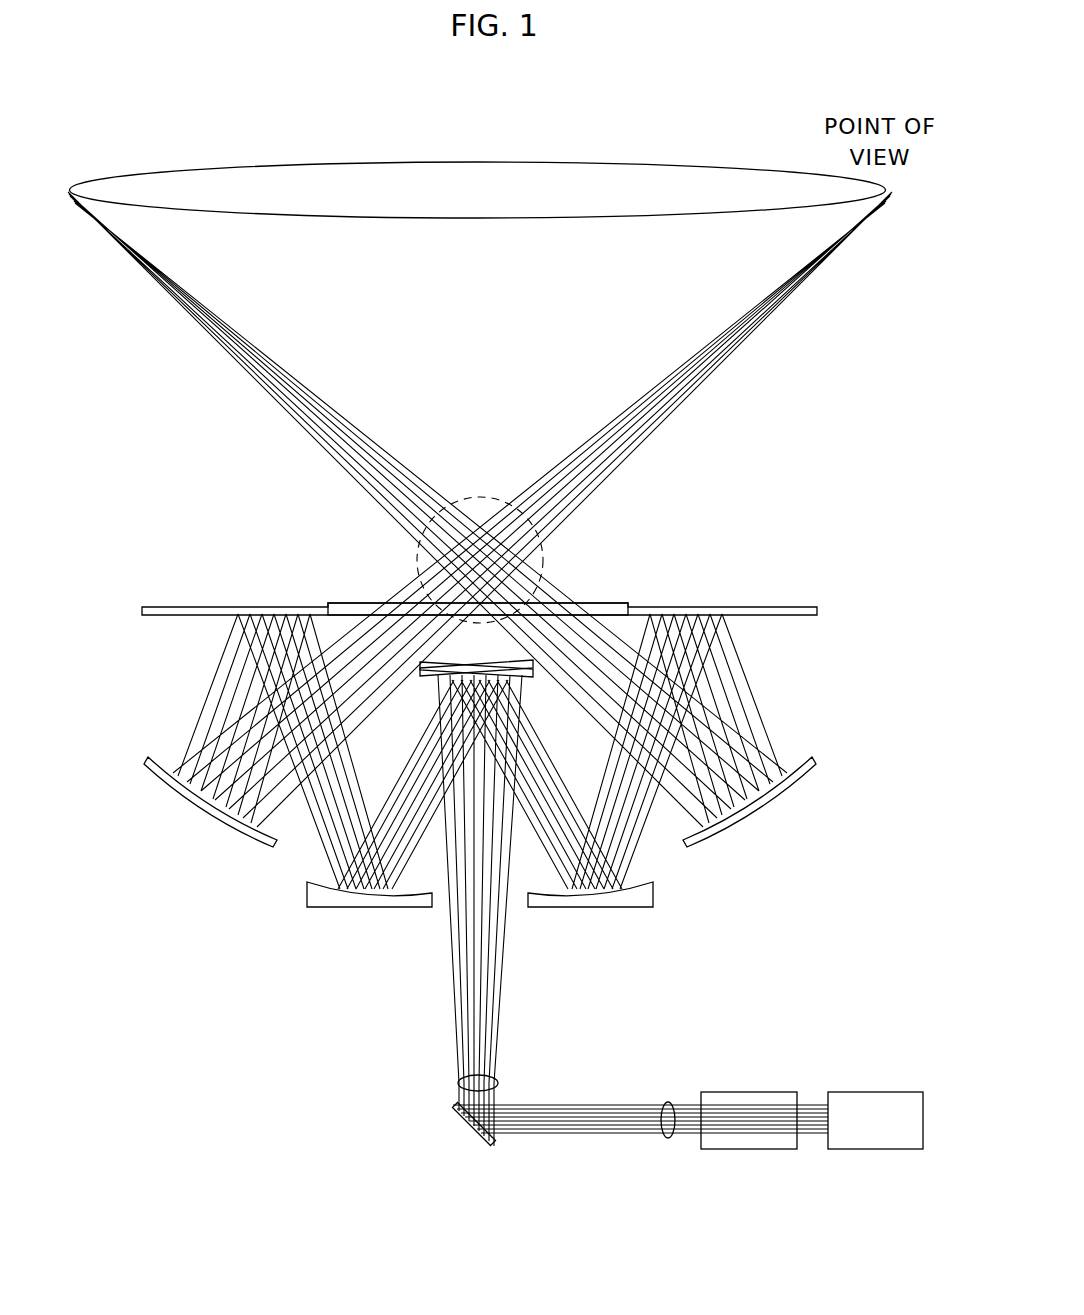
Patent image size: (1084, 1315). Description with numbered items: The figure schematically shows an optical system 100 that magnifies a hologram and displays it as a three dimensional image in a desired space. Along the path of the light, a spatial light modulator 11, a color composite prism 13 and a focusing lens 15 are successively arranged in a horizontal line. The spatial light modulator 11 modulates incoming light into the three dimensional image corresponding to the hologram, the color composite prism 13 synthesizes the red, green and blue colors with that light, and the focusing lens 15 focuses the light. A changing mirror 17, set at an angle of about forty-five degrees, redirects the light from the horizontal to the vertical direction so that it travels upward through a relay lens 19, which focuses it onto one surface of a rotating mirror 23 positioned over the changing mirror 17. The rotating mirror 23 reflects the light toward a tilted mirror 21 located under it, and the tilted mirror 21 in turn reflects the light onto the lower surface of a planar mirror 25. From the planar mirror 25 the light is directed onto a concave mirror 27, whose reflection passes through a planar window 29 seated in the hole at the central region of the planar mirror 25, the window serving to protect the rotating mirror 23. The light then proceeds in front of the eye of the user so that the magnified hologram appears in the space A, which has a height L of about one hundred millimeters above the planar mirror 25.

The optical system 100 is at (470, 100).
The spatial light modulator 11 is at (873, 1150).
The color composite prism 13 is at (745, 1150).
The focusing lens 15 is at (668, 1140).
The changing mirror 17 is at (472, 1146).
The relay lens 19 is at (458, 1083).
The tilted mirror 21 is at (655, 893).
The rotating mirror 23 is at (537, 662).
The planar mirror 25 is at (818, 611).
The concave mirror 27 is at (768, 800).
The planar window 29 is at (352, 605).
The space A is at (481, 497).
The height L is at (425, 554).